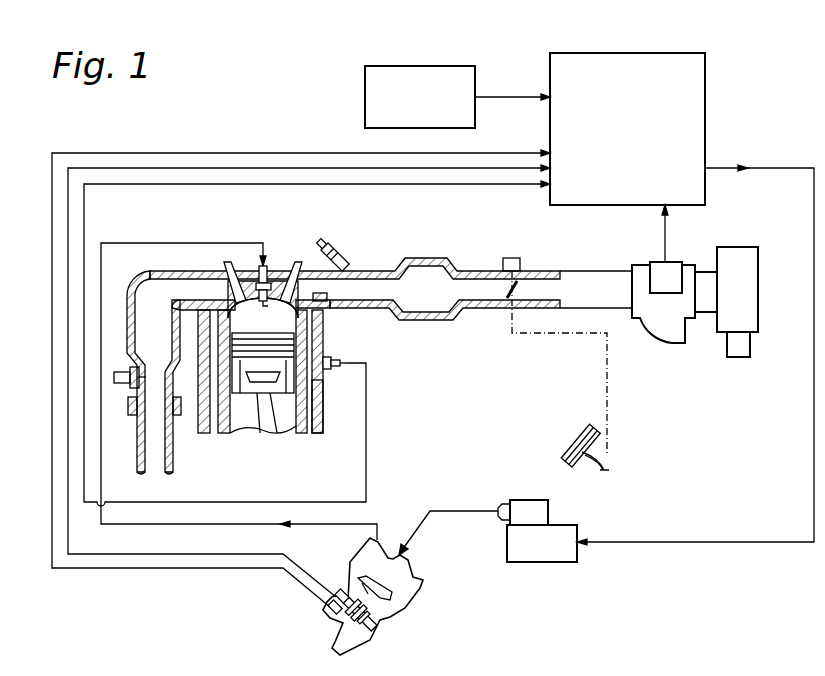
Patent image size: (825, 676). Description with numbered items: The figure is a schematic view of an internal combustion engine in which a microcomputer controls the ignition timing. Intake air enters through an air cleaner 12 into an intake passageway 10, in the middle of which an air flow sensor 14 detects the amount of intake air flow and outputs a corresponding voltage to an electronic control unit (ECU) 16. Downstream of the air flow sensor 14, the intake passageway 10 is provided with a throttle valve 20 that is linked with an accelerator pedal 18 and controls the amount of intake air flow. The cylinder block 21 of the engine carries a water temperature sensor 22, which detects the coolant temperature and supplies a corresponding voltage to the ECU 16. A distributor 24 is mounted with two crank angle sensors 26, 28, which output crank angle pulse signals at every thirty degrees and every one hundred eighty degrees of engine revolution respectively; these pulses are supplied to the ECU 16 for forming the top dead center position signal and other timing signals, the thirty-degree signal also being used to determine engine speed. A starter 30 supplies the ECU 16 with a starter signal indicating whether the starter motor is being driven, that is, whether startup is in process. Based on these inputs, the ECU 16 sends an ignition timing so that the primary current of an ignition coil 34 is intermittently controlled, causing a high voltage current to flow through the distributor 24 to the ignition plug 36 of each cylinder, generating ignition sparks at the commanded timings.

The intake passageway 10 is at (586, 271).
The air cleaner 12 is at (760, 318).
The air flow sensor 14 is at (667, 343).
The electronic control unit (ECU) 16 is at (630, 50).
The accelerator pedal 18 is at (571, 452).
The throttle valve 20 is at (507, 284).
The cylinder block 21 is at (322, 398).
The water temperature sensor 22 is at (333, 354).
The distributor 24 is at (416, 605).
The crank angle sensor 26 is at (327, 607).
The crank angle sensor 28 is at (340, 592).
The starter 30 is at (443, 66).
The ignition coil 34 is at (548, 510).
The ignition plug 36 is at (268, 284).